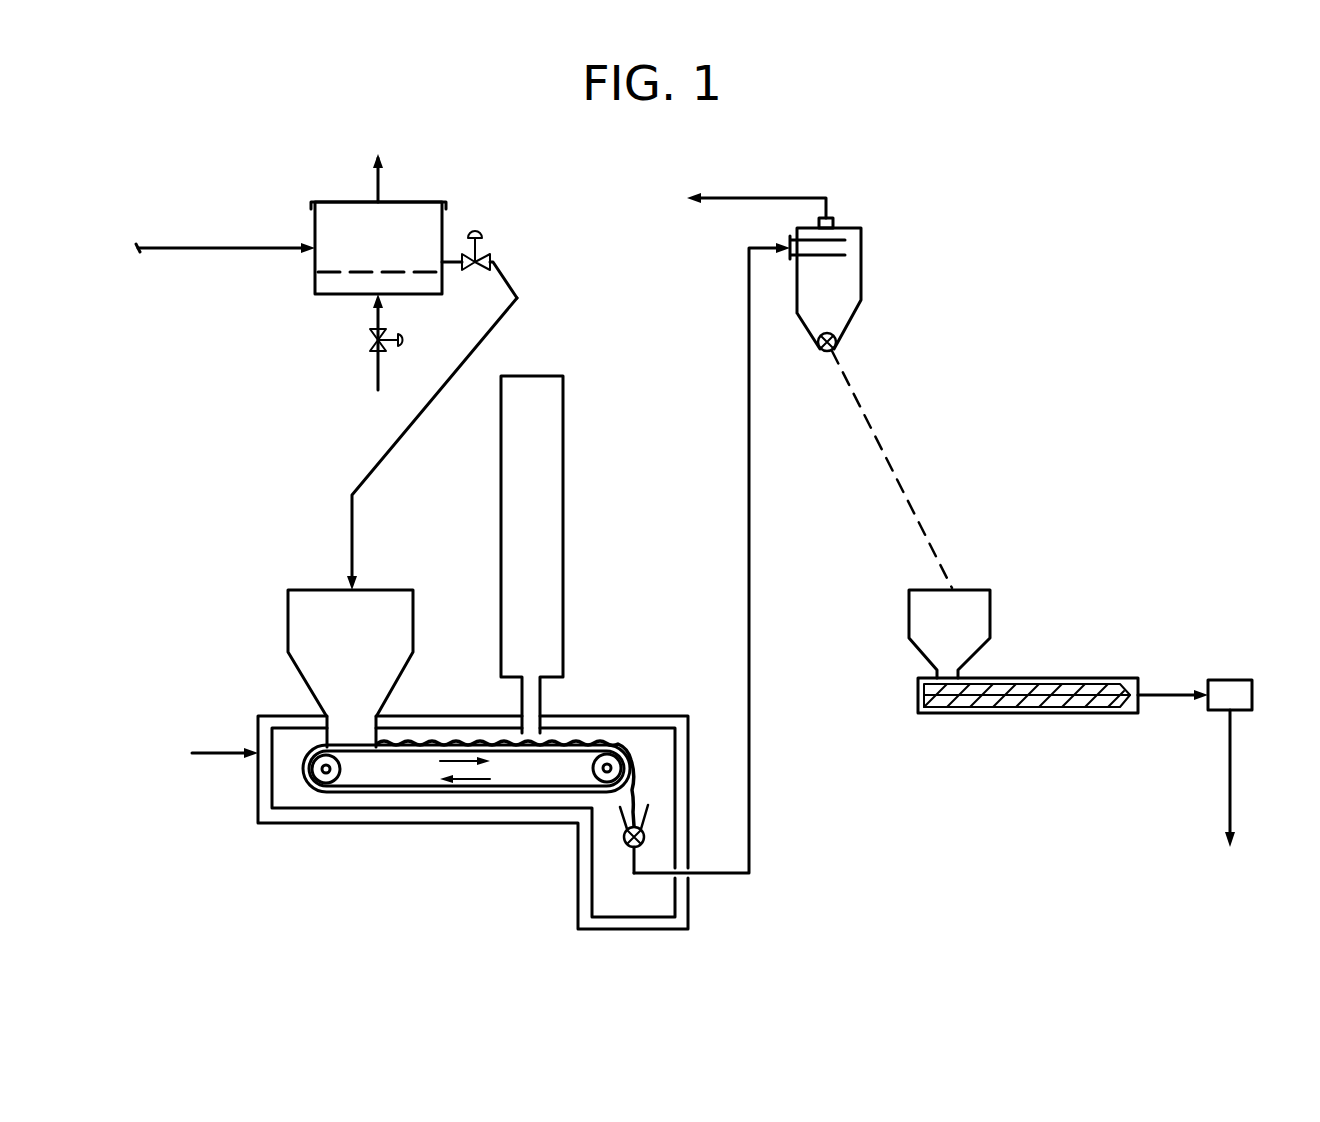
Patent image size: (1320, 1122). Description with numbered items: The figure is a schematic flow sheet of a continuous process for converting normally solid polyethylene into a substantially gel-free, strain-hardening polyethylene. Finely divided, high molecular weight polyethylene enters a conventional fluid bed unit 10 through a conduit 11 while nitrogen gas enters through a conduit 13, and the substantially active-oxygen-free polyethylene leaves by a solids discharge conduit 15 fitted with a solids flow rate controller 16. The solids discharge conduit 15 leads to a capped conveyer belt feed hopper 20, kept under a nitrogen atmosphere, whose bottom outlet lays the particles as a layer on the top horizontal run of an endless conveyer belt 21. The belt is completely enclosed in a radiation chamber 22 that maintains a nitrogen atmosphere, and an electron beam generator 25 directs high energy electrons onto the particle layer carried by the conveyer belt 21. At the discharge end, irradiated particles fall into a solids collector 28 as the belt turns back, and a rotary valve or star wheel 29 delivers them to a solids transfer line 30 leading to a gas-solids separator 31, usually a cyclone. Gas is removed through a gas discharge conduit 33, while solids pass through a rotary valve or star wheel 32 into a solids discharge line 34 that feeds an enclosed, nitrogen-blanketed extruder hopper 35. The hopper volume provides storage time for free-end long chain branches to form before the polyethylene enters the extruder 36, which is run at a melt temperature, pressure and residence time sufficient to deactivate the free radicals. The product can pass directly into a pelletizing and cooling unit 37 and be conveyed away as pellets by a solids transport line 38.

The fluid bed unit 10 is at (315, 282).
The conduit 11 is at (202, 248).
The conduit 13 is at (376, 314).
The solids discharge conduit 15 is at (380, 461).
The solids flow rate controller 16 is at (496, 259).
The conveyer belt feed hopper 20 is at (288, 614).
The endless conveyer belt 21 is at (410, 795).
The radiation chamber 22 is at (258, 795).
The electron beam generator 25 is at (563, 465).
The solids collector 28 is at (620, 814).
The rotary valve or star wheel 29 is at (632, 848).
The solids transfer line 30 is at (749, 462).
The gas-solids separator 31 is at (861, 280).
The rotary valve or star wheel 32 is at (818, 350).
The gas discharge conduit 33 is at (750, 198).
The solids discharge line 34 is at (912, 471).
The extruder hopper 35 is at (985, 621).
The extruder 36 is at (1089, 678).
The pelletizing and cooling unit 37 is at (1230, 686).
The solids transport line 38 is at (1230, 776).